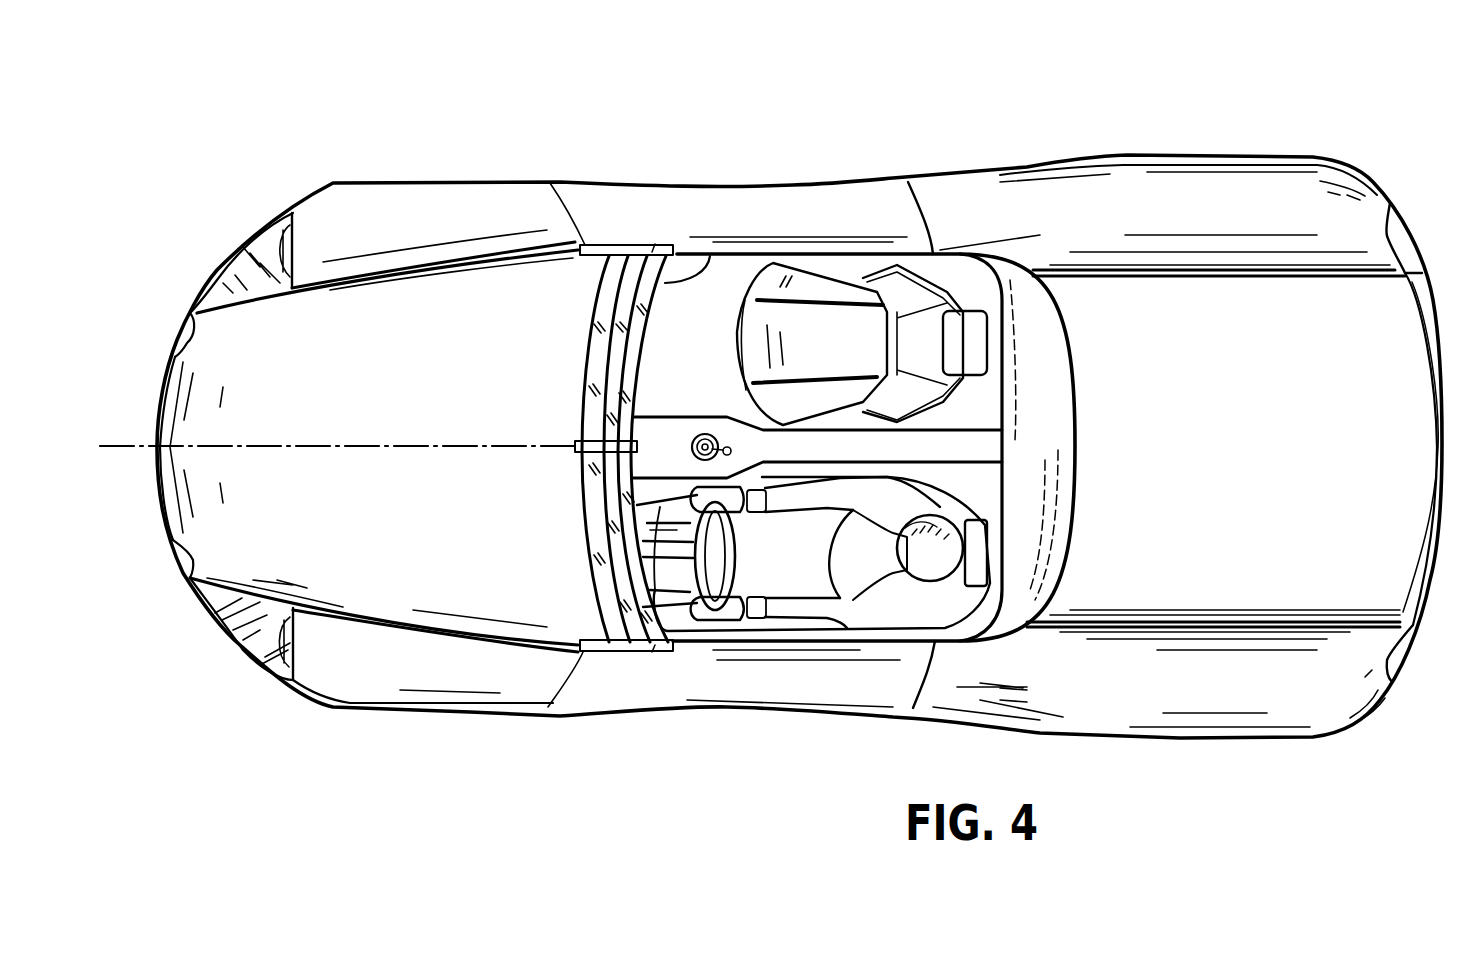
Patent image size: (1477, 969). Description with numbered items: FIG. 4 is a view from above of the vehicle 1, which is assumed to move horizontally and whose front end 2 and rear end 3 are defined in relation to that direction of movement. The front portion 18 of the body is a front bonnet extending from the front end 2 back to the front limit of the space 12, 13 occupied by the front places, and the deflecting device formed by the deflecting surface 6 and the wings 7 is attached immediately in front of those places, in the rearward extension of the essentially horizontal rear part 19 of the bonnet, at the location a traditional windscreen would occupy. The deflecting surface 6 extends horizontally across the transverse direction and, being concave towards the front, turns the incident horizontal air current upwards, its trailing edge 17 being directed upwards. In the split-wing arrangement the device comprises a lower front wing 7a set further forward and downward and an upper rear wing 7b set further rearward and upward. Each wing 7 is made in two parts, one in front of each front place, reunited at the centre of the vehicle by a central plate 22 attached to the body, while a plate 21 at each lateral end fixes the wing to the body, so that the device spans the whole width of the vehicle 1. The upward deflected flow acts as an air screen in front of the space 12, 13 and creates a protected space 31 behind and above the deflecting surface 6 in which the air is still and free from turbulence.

The vehicle 1 is at (428, 711).
The front end 2 is at (157, 489).
The rear end 3 is at (1405, 337).
The deflecting surface 6 is at (630, 347).
The wing 7 is at (592, 359).
The lower front wing 7a is at (603, 246).
The upper rear wing 7b is at (638, 250).
The space occupied by front place 12 is at (838, 565).
The space occupied by front place 13 is at (807, 322).
The trailing edge of the deflecting surface 17 is at (710, 256).
The front portion of the body 18 is at (490, 193).
The rear part of the front portion of the body 19 is at (575, 490).
The plate 21 is at (655, 245).
The central plate 22 is at (575, 443).
The protected space 31 is at (657, 437).